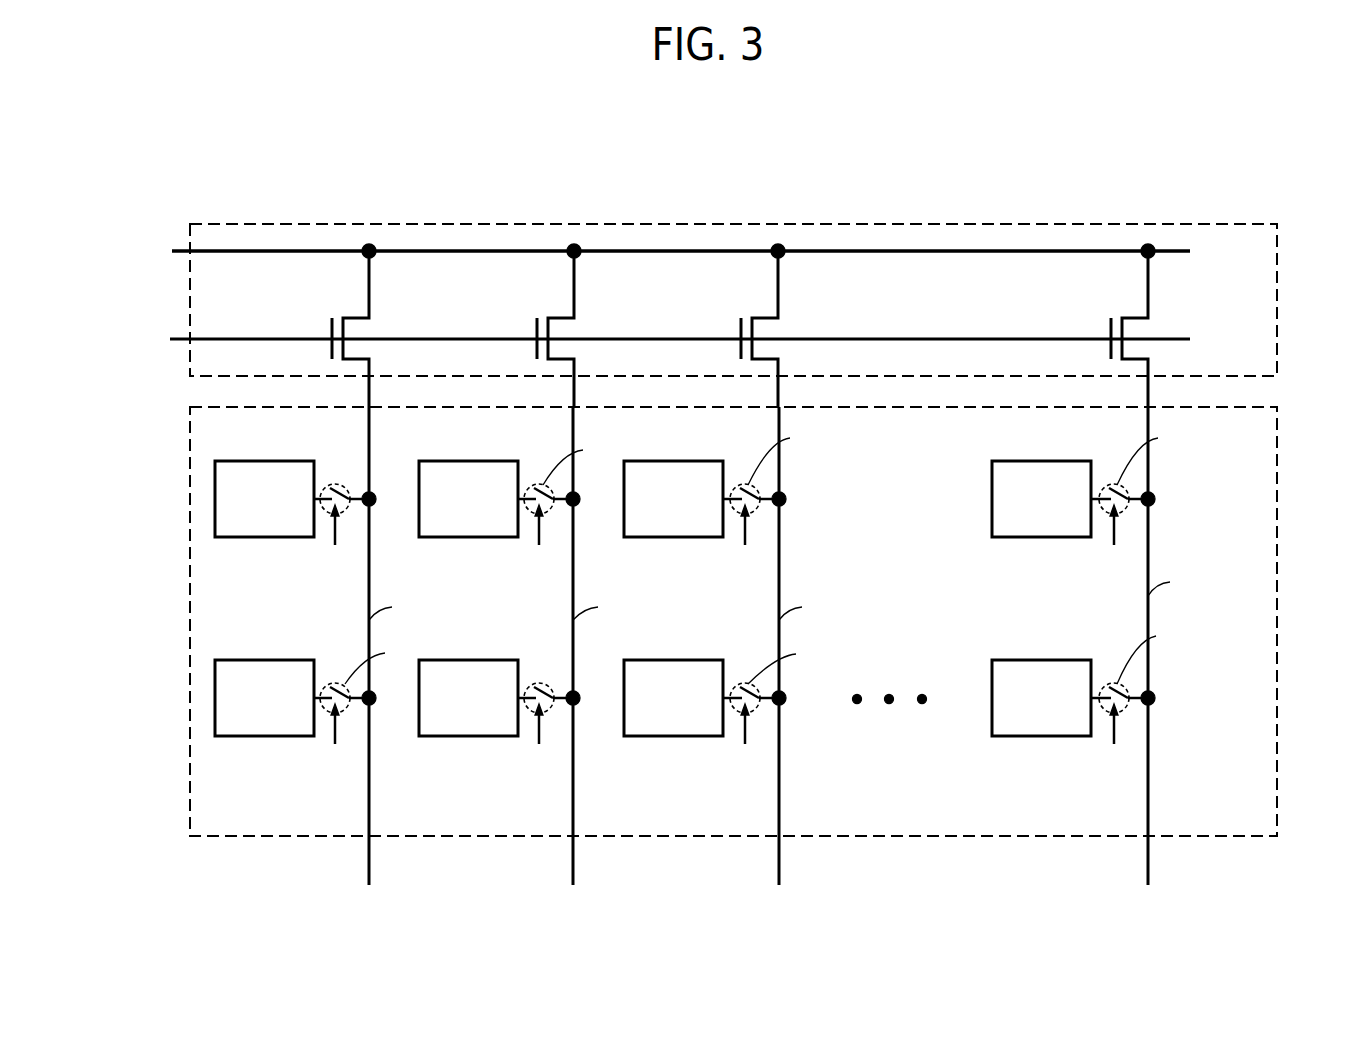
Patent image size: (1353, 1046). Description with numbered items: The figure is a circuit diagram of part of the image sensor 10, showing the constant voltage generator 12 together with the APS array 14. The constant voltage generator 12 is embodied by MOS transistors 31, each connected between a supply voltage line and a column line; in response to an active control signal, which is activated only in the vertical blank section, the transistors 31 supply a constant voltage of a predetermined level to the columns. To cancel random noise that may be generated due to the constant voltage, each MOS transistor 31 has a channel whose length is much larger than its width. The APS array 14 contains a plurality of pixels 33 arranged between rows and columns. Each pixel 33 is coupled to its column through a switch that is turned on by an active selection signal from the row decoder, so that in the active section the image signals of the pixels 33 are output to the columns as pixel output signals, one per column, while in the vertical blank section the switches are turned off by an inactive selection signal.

The image sensor 10 is at (1210, 184).
The constant voltage generator 12 is at (1277, 297).
The APS array 14 is at (1277, 530).
The MOS transistor 31 is at (388, 323).
The pixel 33 is at (277, 461).